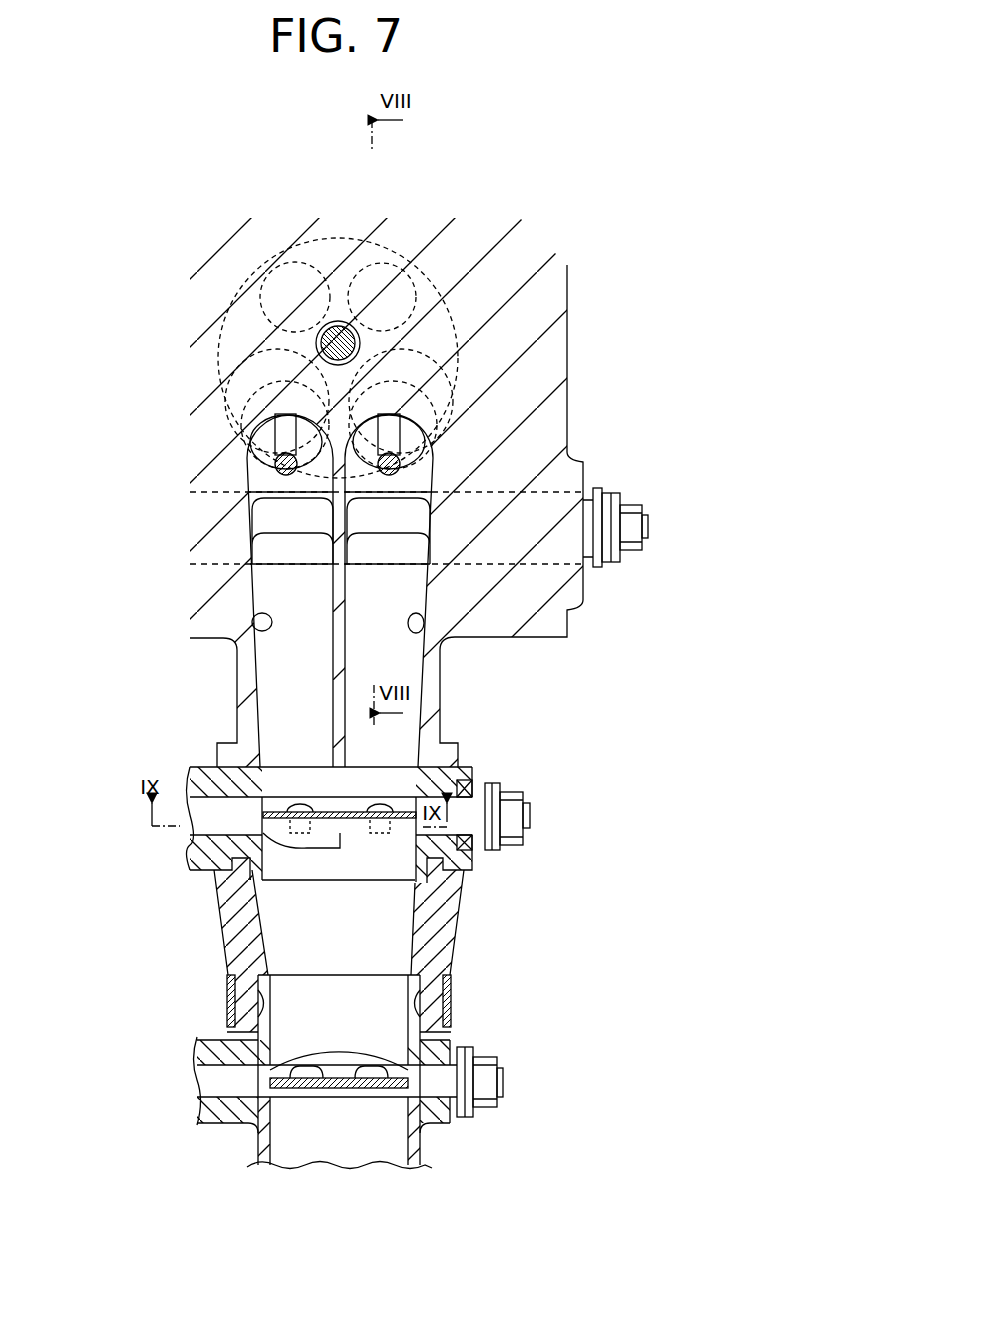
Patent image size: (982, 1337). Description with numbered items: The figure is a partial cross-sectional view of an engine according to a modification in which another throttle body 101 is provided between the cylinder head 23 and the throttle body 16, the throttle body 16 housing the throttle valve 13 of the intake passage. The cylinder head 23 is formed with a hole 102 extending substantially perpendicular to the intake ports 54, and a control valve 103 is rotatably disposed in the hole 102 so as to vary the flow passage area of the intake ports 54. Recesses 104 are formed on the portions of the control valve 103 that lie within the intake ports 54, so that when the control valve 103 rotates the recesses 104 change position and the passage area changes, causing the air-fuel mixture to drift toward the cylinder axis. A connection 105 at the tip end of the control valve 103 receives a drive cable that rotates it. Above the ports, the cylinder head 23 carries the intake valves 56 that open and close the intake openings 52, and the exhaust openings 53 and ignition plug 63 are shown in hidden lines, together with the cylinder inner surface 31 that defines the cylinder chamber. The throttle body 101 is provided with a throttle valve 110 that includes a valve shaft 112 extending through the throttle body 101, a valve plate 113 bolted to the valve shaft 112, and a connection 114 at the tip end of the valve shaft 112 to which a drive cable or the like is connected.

The throttle valve 13 is at (338, 1090).
The throttle body 16 is at (453, 955).
The cylinder head 23 is at (568, 397).
The cylinder inner surface 31 is at (447, 308).
The intake opening 52 is at (248, 373).
The exhaust opening 53 is at (276, 262).
The intake port 54 is at (252, 626).
The intake valve 56 is at (292, 443).
The ignition plug 63 is at (339, 330).
The throttle body 101 is at (473, 768).
The hole 102 is at (553, 551).
The control valve 103 is at (660, 526).
The recess 104 is at (299, 518).
The connection 105 is at (600, 488).
The throttle valve 110 is at (472, 816).
The valve shaft 112 is at (408, 797).
The valve plate 113 is at (309, 857).
The connection 114 is at (498, 784).